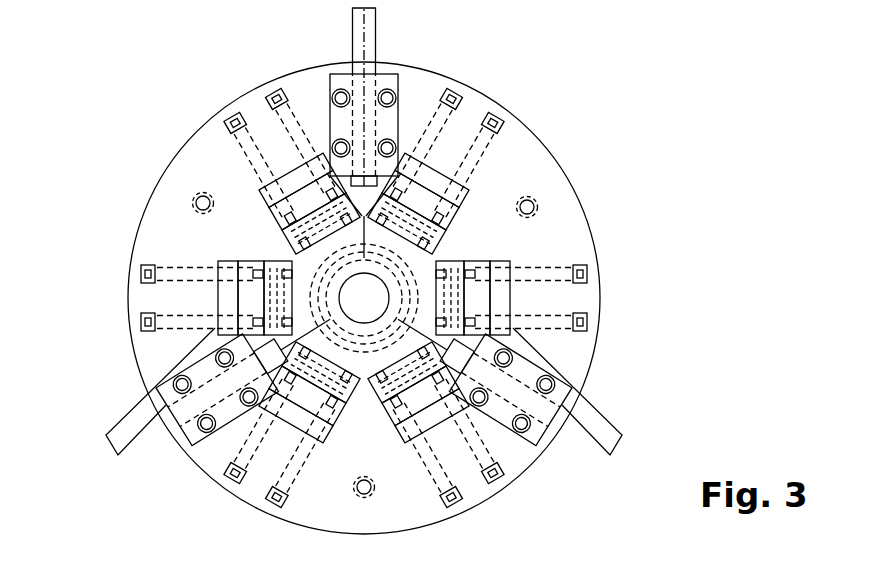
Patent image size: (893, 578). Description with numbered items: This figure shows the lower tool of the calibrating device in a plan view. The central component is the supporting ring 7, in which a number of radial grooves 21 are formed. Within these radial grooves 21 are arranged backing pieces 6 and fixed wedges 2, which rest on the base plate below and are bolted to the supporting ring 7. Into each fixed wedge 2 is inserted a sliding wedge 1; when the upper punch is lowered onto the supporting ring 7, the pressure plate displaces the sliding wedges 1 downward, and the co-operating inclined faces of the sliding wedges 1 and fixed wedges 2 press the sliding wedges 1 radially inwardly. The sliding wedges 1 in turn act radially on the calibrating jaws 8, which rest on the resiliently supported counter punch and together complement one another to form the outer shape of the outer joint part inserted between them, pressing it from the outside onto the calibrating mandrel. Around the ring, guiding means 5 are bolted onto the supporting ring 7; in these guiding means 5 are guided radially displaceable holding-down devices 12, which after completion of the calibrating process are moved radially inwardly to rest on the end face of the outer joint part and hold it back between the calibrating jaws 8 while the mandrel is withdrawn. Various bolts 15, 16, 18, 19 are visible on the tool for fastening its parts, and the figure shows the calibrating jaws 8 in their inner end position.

The sliding wedge 1 is at (482, 270).
The fixed wedge 2 is at (477, 317).
The guiding means 5 is at (343, 83).
The backing piece 6 is at (502, 302).
The supporting ring 7 is at (555, 185).
The calibrating jaw 8 is at (440, 257).
The holding-down device 12 is at (367, 30).
The bolt 15 is at (196, 200).
The bolt 16 is at (257, 197).
The bolt 18 is at (292, 242).
The bolt 19 is at (156, 384).
The radial groove 21 is at (478, 287).